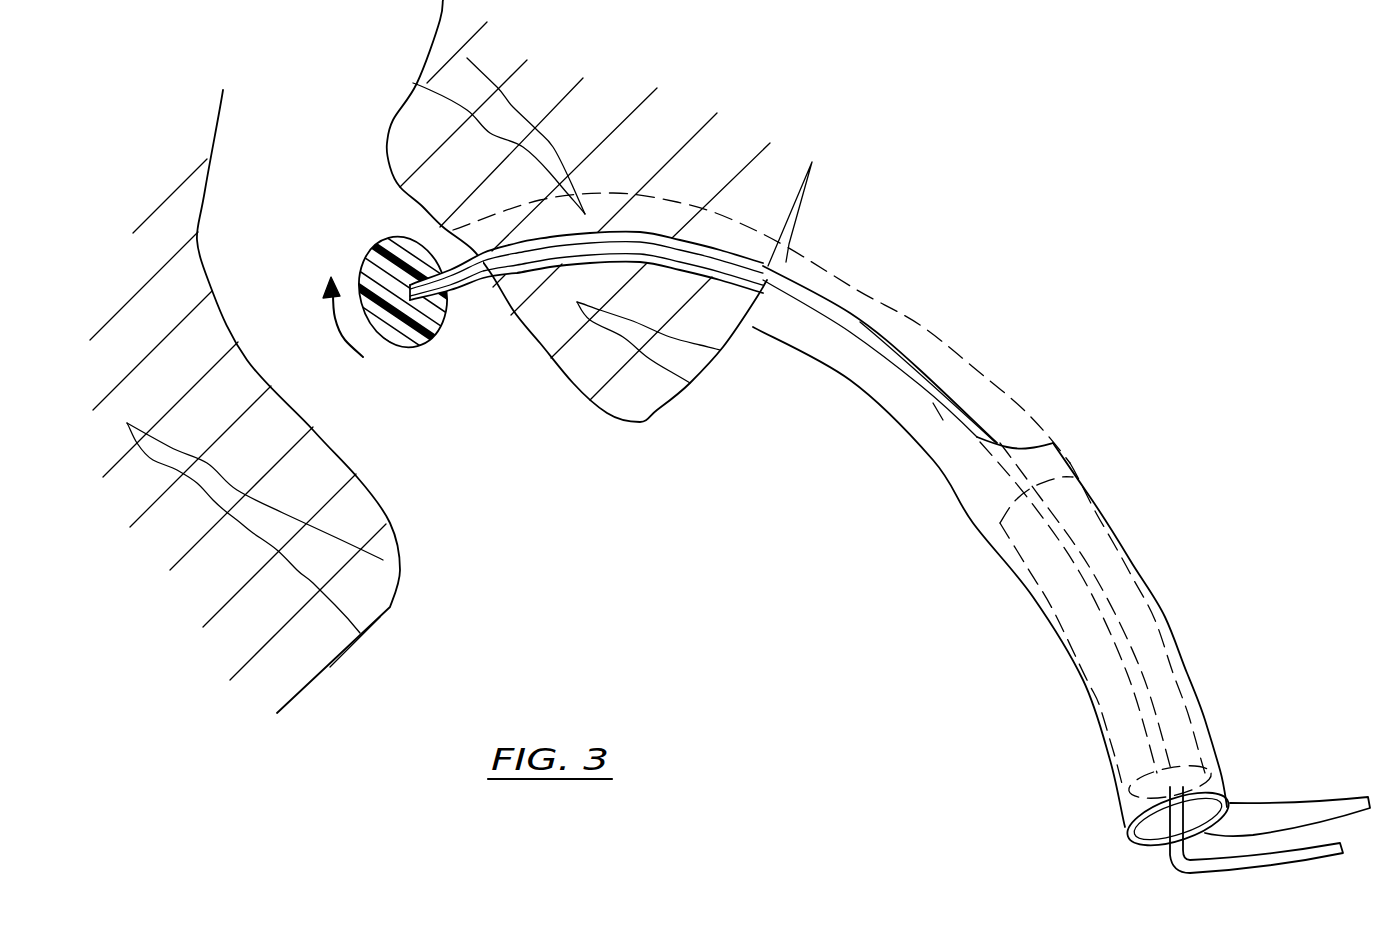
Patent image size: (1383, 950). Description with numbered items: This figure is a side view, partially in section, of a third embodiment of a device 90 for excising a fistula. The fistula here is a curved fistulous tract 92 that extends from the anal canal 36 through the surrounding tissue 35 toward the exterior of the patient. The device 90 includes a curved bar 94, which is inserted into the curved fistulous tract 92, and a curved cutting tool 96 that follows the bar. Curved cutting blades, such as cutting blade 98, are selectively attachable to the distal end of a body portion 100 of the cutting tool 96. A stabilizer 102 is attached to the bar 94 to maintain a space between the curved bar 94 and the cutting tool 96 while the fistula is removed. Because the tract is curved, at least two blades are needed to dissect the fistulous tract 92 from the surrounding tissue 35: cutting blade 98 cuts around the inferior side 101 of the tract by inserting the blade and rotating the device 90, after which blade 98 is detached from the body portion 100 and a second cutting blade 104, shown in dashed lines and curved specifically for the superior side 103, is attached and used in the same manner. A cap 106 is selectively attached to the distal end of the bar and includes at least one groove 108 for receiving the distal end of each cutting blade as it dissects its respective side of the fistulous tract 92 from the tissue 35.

The surrounding tissue 35 is at (594, 139).
The anal canal 36 is at (319, 215).
The device 90 is at (915, 175).
The curved fistulous tract 92 is at (677, 212).
The curved bar 94 is at (813, 296).
The curved cutting tool 96 is at (1090, 488).
The cutting blade 98 is at (870, 393).
The body portion 100 is at (1175, 680).
The inferior side 101 is at (705, 322).
The stabilizer 102 is at (1090, 643).
The superior side 103 is at (776, 200).
The cutting blade 104 is at (985, 370).
The cap 106 is at (416, 347).
The groove 108 is at (445, 325).